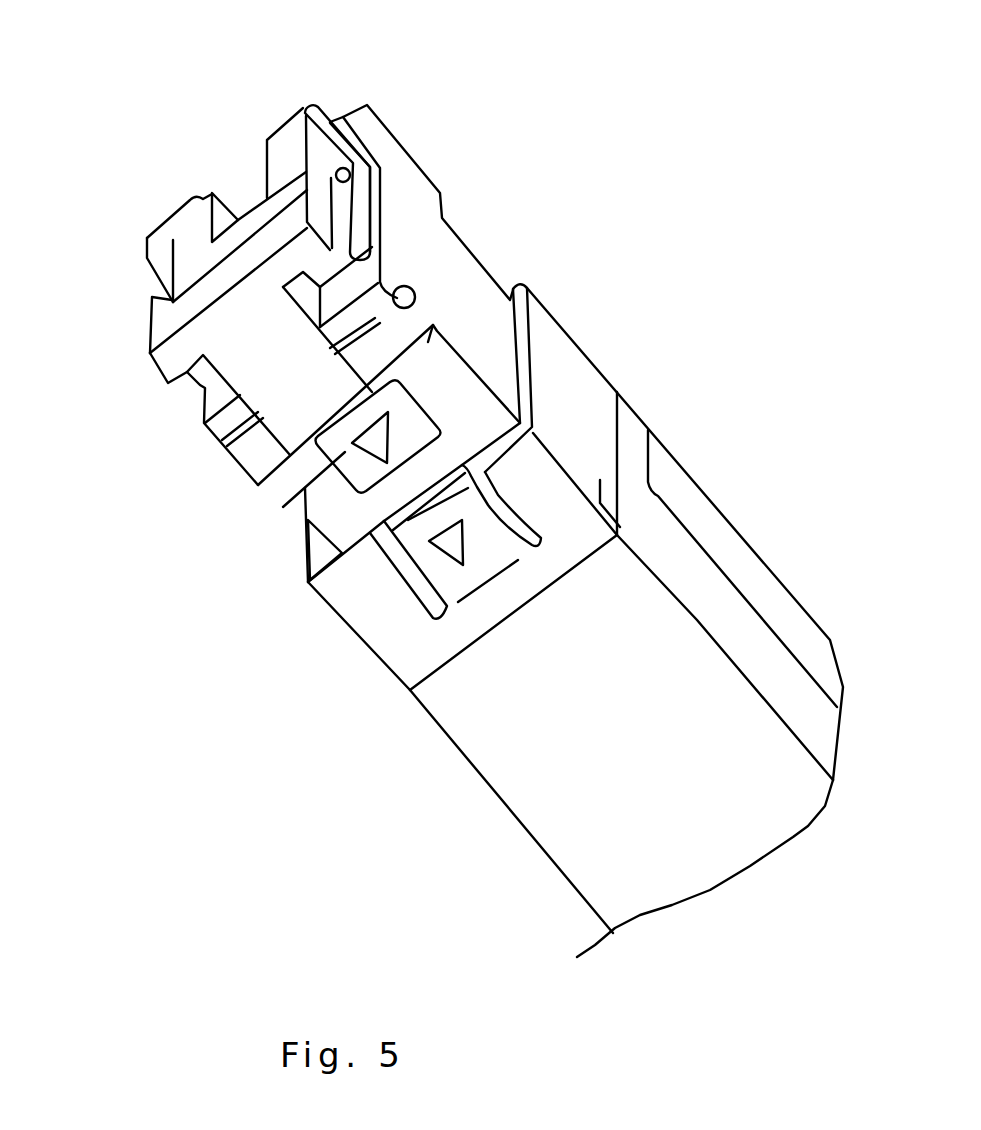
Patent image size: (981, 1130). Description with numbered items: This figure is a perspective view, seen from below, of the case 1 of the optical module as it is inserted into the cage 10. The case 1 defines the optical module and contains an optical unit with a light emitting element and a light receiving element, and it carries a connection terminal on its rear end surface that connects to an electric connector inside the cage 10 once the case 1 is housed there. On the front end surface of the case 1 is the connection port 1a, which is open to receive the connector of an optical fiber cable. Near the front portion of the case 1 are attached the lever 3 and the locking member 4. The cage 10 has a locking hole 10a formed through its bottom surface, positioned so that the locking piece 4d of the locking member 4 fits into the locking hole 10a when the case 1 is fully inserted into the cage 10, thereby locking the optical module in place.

The case 1 is at (457, 270).
The connection port 1a is at (243, 192).
The lever 3 is at (317, 107).
The locking member 4 is at (117, 356).
The locking piece 4d is at (330, 463).
The cage 10 is at (583, 393).
The locking hole 10a is at (437, 546).